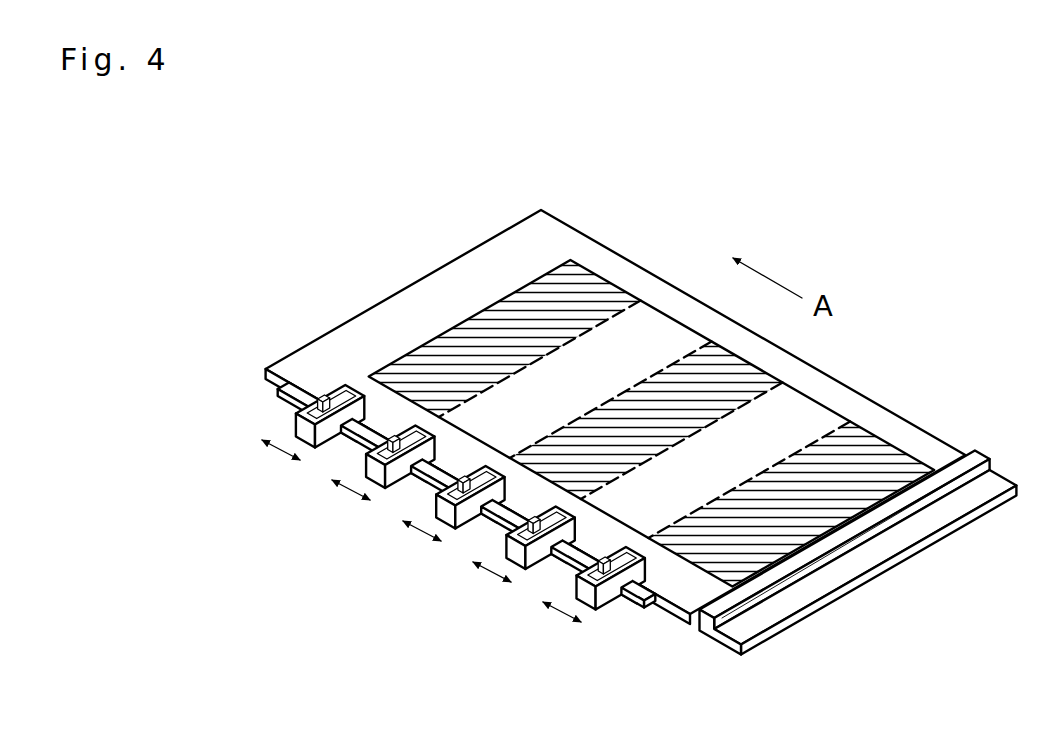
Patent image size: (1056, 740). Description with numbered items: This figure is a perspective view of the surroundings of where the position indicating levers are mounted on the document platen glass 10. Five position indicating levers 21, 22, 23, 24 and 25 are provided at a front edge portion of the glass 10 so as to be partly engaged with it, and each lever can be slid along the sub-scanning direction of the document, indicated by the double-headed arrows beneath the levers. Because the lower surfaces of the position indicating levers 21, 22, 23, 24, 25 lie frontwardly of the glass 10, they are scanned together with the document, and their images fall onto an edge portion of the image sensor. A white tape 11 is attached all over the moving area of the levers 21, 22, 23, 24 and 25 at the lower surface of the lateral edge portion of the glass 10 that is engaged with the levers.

The document platen glass 10 is at (553, 240).
The white tape 11 is at (292, 395).
The position indicating lever 21 is at (606, 610).
The position indicating lever 22 is at (543, 565).
The position indicating lever 23 is at (472, 524).
The position indicating lever 24 is at (403, 484).
The position indicating lever 25 is at (327, 443).